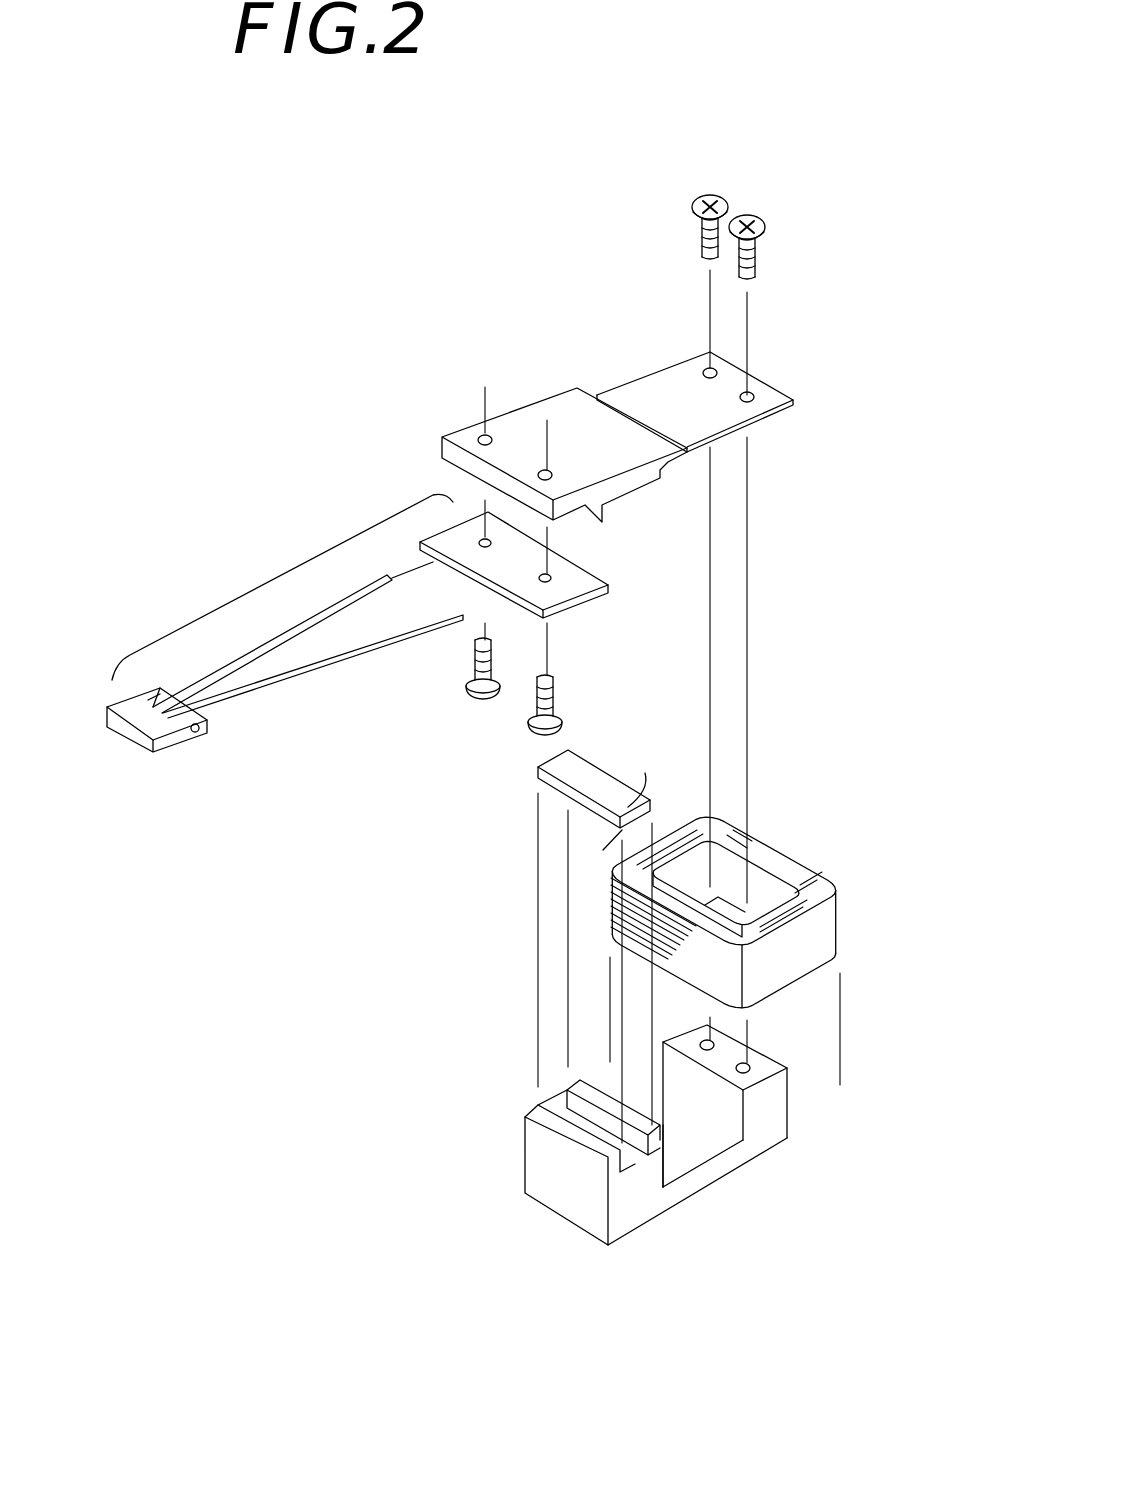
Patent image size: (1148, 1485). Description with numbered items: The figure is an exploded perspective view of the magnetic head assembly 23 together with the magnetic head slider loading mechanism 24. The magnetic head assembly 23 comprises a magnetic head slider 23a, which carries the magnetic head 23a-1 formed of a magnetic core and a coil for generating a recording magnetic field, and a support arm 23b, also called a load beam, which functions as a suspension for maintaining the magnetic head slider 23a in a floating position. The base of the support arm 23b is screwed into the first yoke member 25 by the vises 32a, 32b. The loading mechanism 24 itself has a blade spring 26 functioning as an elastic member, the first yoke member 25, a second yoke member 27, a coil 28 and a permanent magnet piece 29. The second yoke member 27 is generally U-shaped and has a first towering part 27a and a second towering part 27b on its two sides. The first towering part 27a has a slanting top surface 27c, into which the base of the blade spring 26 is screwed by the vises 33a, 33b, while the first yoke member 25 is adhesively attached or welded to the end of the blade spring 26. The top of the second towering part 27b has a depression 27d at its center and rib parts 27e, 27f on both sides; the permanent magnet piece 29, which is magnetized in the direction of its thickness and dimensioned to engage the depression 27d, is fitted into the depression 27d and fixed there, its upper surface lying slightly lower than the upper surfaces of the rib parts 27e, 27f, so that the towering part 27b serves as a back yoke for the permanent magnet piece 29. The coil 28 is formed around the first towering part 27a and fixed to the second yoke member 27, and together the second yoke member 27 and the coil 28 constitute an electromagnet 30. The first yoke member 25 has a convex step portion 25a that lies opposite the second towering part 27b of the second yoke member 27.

The magnetic head assembly 23 is at (280, 681).
The magnetic head slider 23a is at (143, 747).
The arm base projection 23a-1 is at (200, 733).
The support arm 23b is at (267, 687).
The magnetic head slider loading mechanism 24 is at (817, 558).
The first yoke member 25 is at (530, 417).
The convex step portion 25a is at (560, 565).
The blade spring 26 is at (650, 380).
The second yoke member 27 is at (656, 1166).
The first towering part 27a is at (768, 1113).
The second towering part 27b is at (567, 1182).
The slanting top surface 27c is at (790, 1063).
The depression 27d is at (633, 1160).
The rib part 27e is at (533, 1112).
The rib part 27f is at (663, 1117).
The coil 28 is at (830, 880).
The permanent magnet piece 29 is at (537, 783).
The electromagnet 30 is at (518, 1058).
The vise 32a is at (466, 687).
The vise 32b is at (523, 722).
The vise 33a is at (707, 195).
The vise 33b is at (758, 218).